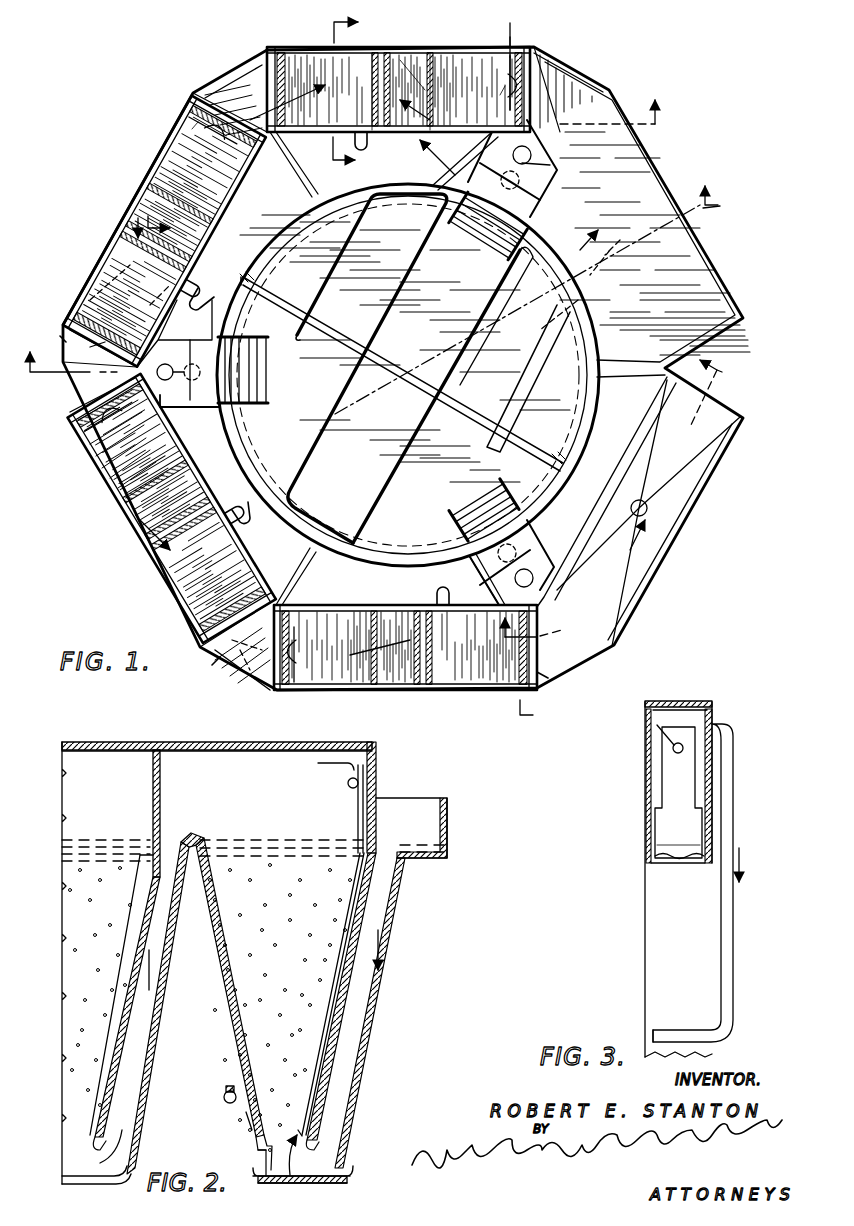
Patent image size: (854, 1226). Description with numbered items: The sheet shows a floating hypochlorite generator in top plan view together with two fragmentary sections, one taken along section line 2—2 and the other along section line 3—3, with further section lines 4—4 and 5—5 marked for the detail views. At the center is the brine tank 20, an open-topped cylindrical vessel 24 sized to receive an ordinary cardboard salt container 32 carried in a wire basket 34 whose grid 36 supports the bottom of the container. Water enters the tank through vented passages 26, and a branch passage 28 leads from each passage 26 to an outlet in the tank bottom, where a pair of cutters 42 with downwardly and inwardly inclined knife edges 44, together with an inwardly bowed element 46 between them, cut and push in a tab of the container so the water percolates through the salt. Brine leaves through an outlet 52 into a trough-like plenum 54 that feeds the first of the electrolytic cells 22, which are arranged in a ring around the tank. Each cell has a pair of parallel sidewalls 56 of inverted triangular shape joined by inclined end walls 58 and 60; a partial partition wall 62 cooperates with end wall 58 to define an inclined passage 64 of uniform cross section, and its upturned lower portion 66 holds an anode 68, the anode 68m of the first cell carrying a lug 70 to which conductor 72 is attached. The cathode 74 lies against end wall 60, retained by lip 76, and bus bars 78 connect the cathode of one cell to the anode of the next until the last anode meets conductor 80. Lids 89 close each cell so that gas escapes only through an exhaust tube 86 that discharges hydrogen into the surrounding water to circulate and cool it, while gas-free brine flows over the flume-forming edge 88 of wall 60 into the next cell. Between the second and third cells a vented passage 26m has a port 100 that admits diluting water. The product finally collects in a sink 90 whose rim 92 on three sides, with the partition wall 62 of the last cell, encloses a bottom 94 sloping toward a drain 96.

In FIG. 1, the brine tank 20 is at (405, 348).
In FIG. 1, the electrolytic cells 22 is at (466, 44).
In FIG. 2, the electrolytic cells 22 is at (75, 808).
In FIG. 3, the electrolytic cells 22 is at (655, 923).
In FIG. 1, the hollow cylindrical vessel 24 is at (450, 180).
In FIG. 1, the vented passage 26 is at (540, 178).
In FIG. 1, the vented passage 26m is at (191, 357).
In FIG. 1, the branch passage 28 is at (478, 172).
In FIG. 1, the cardboard salt container 32 is at (592, 396).
In FIG. 1, the wire basket 34 is at (392, 478).
In FIG. 1, the grid 36 is at (458, 394).
In FIG. 1, the cutters 42 is at (243, 274).
In FIG. 1, the knife edges 44 is at (520, 272).
In FIG. 1, the inwardly bowed elements 46 is at (478, 257).
In FIG. 1, the outlet 52 is at (588, 287).
In FIG. 1, the plenum 54 is at (700, 284).
In FIG. 2, the plenum 54 is at (430, 842).
In FIG. 1, the sidewalls 56 is at (465, 118).
In FIG. 3, the sidewalls 56 is at (712, 779).
In FIG. 1, the end wall 58 is at (555, 72).
In FIG. 2, the end wall 58 is at (153, 1054).
In FIG. 2, the end wall 60 is at (222, 966).
In FIG. 1, the partial partition wall 62 is at (560, 44).
In FIG. 2, the partial partition wall 62 is at (105, 1096).
In FIG. 1, the passage 64 is at (585, 84).
In FIG. 2, the passage 64 is at (165, 1004).
In FIG. 1, the upturned portion 66 is at (414, 57).
In FIG. 2, the upturned portion 66 is at (298, 1130).
In FIG. 1, the anode 68 is at (192, 129).
In FIG. 2, the anode 68 is at (142, 862).
In FIG. 1, the modified anode 68m is at (500, 95).
In FIG. 2, the modified anode 68m is at (345, 930).
In FIG. 3, the modified anode 68m is at (668, 842).
In FIG. 1, the lug 70 is at (514, 90).
In FIG. 2, the lug 70 is at (358, 802).
In FIG. 3, the lug 70 is at (668, 768).
In FIG. 1, the electrical conductor 72 is at (510, 37).
In FIG. 2, the electrical conductor 72 is at (330, 764).
In FIG. 3, the electrical conductor 72 is at (657, 727).
In FIG. 1, the cathode 74 is at (292, 62).
In FIG. 2, the cathode 74 is at (246, 1112).
In FIG. 3, the cathode 74 is at (668, 867).
In FIG. 1, the lip 76 is at (385, 58).
In FIG. 2, the lip 76 is at (274, 1148).
In FIG. 1, the bus bar 78 is at (236, 68).
In FIG. 1, the conductor 80 is at (531, 711).
In FIG. 1, the exhaust tube 86 is at (368, 150).
In FIG. 2, the exhaust tube 86 is at (226, 1104).
In FIG. 3, the exhaust tube 86 is at (733, 936).
In FIG. 1, the flume-forming edge 88 is at (270, 87).
In FIG. 2, the flume-forming edge 88 is at (194, 835).
In FIG. 2, the lids 89 is at (147, 742).
In FIG. 3, the lids 89 is at (660, 698).
In FIG. 1, the chute rib 90 is at (655, 590).
In FIG. 1, the rim 92 is at (680, 555).
In FIG. 1, the bottom 94 is at (625, 598).
In FIG. 1, the drain 96 is at (648, 507).
In FIG. 1, the port 100 is at (140, 347).
In FIG. 1, the section line 2— 2 is at (403, 177).
In FIG. 1, the section line 3— 3 is at (338, 89).
In FIG. 1, the section line 4— 4 is at (368, 287).
In FIG. 1, the section line 5— 5 is at (610, 503).